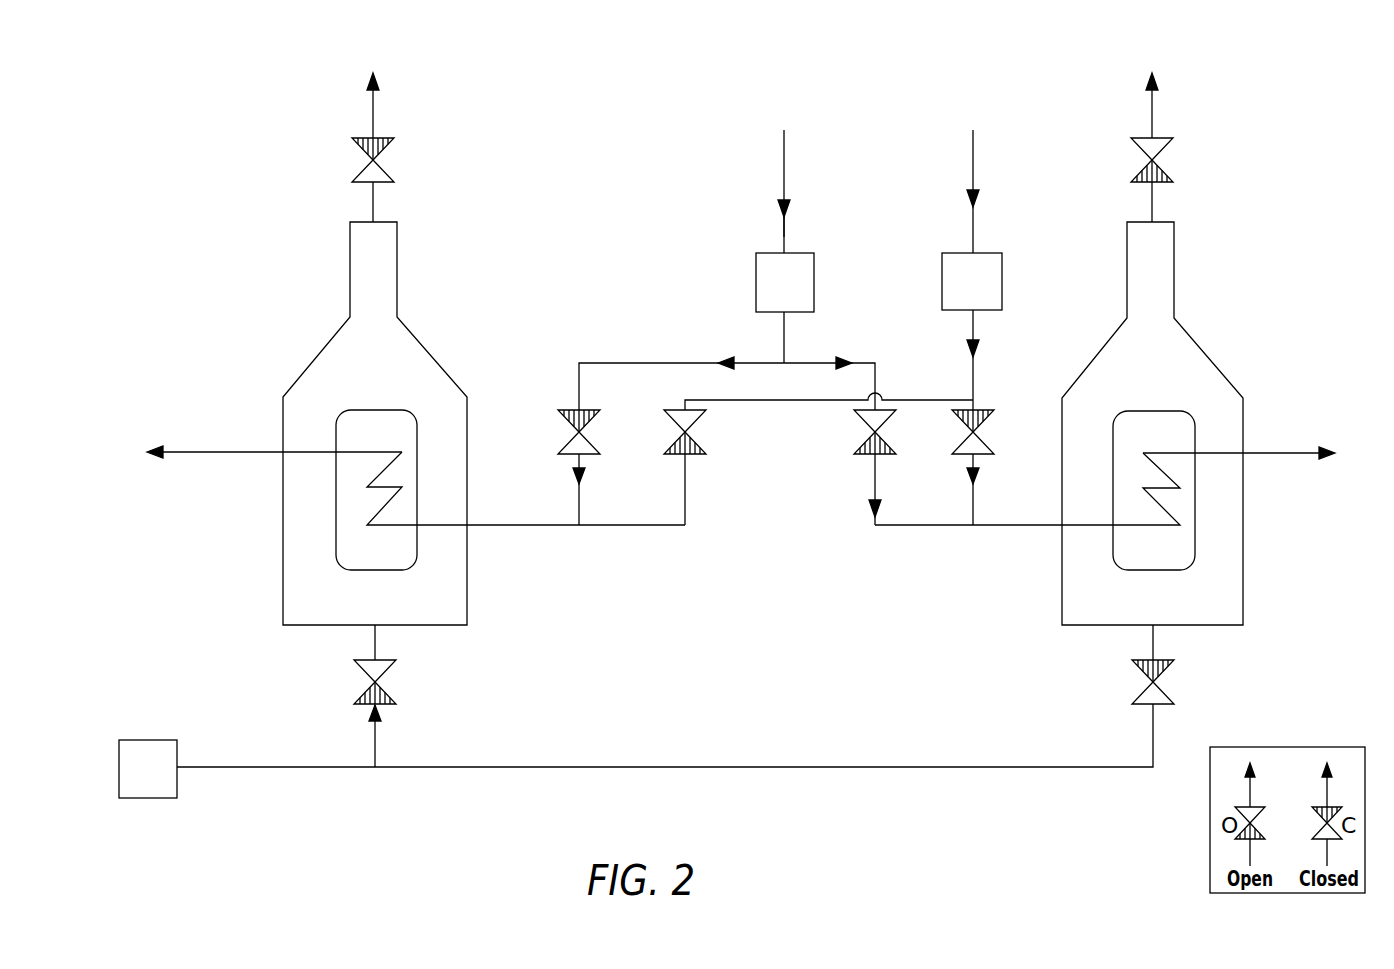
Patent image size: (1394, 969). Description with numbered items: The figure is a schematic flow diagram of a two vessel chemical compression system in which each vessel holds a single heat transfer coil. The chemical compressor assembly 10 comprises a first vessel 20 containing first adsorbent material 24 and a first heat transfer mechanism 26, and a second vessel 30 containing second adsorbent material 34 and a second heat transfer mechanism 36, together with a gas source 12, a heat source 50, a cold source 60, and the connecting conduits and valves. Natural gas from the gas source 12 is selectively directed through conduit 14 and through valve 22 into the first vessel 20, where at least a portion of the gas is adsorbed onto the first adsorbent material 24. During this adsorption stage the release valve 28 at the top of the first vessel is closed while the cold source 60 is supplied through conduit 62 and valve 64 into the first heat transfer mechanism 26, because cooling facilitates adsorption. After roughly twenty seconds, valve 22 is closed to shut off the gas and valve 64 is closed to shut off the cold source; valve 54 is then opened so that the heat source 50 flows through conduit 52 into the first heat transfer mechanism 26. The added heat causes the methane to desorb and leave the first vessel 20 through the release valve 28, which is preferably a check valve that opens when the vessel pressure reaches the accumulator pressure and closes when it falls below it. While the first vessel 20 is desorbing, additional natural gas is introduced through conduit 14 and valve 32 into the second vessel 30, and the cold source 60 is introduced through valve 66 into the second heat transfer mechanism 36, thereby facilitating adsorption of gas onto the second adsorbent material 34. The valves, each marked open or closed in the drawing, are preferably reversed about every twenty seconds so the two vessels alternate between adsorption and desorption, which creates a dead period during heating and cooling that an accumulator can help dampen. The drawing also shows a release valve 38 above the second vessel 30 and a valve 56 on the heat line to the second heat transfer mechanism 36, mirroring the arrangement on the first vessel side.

The chemical compressor assembly 10 is at (1040, 73).
The gas source 12 is at (148, 769).
The conduit 14 is at (287, 767).
The first vessel 20 is at (355, 338).
The valve 22 is at (370, 683).
The first adsorbent material 24 is at (353, 427).
The first heat transfer mechanism 26 is at (370, 488).
The release valve 28 is at (353, 152).
The second vessel 30 is at (1160, 280).
The valve 32 is at (1168, 692).
The second adsorbent material 34 is at (1153, 422).
The second heat transfer mechanism 36 is at (1150, 507).
The second vessel outlet valve 38 is at (1158, 148).
The heat source 50 is at (972, 220).
The conduit 52 is at (972, 317).
The valve 54 is at (695, 456).
The heating fluid valve to second vessel 56 is at (983, 412).
The cold source 60 is at (785, 221).
The conduit 62 is at (783, 340).
The valve 64 is at (575, 411).
The valve 66 is at (862, 456).